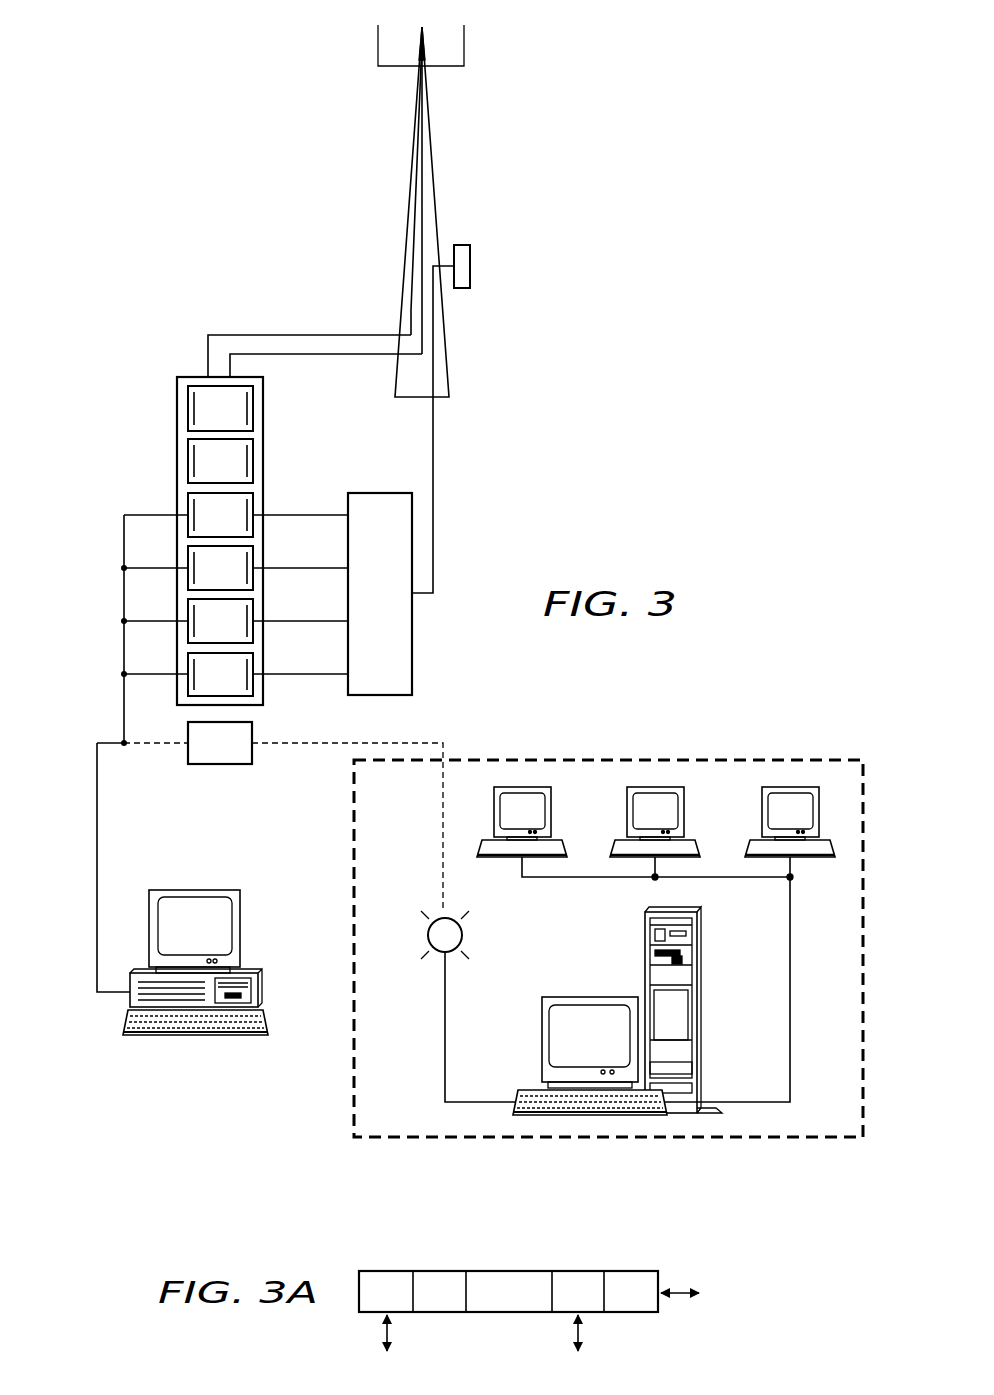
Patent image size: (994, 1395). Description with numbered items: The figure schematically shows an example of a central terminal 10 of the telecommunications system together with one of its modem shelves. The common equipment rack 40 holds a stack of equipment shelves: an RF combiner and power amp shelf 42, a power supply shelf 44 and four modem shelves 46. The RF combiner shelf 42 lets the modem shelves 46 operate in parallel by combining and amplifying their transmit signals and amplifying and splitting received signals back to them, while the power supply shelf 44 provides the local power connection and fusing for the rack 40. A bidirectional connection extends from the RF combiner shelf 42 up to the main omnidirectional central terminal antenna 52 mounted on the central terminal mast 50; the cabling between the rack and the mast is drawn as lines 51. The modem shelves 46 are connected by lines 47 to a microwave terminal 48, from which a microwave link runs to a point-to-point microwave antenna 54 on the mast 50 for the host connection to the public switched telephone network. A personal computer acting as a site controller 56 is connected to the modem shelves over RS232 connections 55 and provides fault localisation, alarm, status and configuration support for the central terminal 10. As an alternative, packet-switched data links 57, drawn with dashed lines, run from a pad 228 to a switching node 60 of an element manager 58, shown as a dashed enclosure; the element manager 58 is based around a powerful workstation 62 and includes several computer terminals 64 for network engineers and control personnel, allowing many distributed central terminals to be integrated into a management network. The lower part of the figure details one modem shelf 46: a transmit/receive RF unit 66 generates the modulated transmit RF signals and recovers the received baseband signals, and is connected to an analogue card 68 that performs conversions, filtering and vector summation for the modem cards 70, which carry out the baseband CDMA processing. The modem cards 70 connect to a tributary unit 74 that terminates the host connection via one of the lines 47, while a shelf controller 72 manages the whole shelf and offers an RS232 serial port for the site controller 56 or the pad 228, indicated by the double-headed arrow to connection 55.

In FIG. 3, the central terminal 10 is at (512, 516).
In FIG. 3, the common equipment rack 40 is at (263, 440).
In FIG. 3, the RF combiner and power amp shelf 42 is at (188, 410).
In FIG. 3A, the RF combiner and power amp shelf 42 is at (387, 1349).
In FIG. 3, the power supply shelf 44 is at (188, 463).
In FIG. 3, the modem shelf 46 is at (188, 505).
In FIG. 3A, the modem shelf 46 is at (702, 1256).
In FIG. 3, the lines 47 is at (305, 678).
In FIG. 3A, the lines 47 is at (578, 1349).
In FIG. 3, the microwave terminal 48 is at (368, 620).
In FIG. 3, the central terminal mast 50 is at (449, 360).
In FIG. 3, the antenna feed cables 51 is at (347, 333).
In FIG. 3, the main central terminal antenna 52 is at (464, 47).
In FIG. 3, the point-to-point microwave antenna 54 is at (470, 264).
In FIG. 3, the RS232 connections 55 is at (97, 889).
In FIG. 3A, the RS232 connections 55 is at (696, 1294).
In FIG. 3, the site controller 56 is at (250, 975).
In FIG. 3, the X.25 links 57 is at (443, 743).
In FIG. 3, the element manager 58 is at (620, 760).
In FIG. 3, the switching node 60 is at (428, 936).
In FIG. 3, the workstation 62 is at (697, 995).
In FIG. 3, the computer terminals 64 is at (551, 801).
In FIG. 3A, the transmit/receive RF unit 66 is at (387, 1271).
In FIG. 3A, the analogue card 68 is at (440, 1271).
In FIG. 3A, the modem cards 70 is at (508, 1271).
In FIG. 3A, the shelf controller 72 is at (630, 1271).
In FIG. 3A, the tributary unit 74 is at (577, 1271).
In FIG. 3, the pad 228 is at (252, 756).